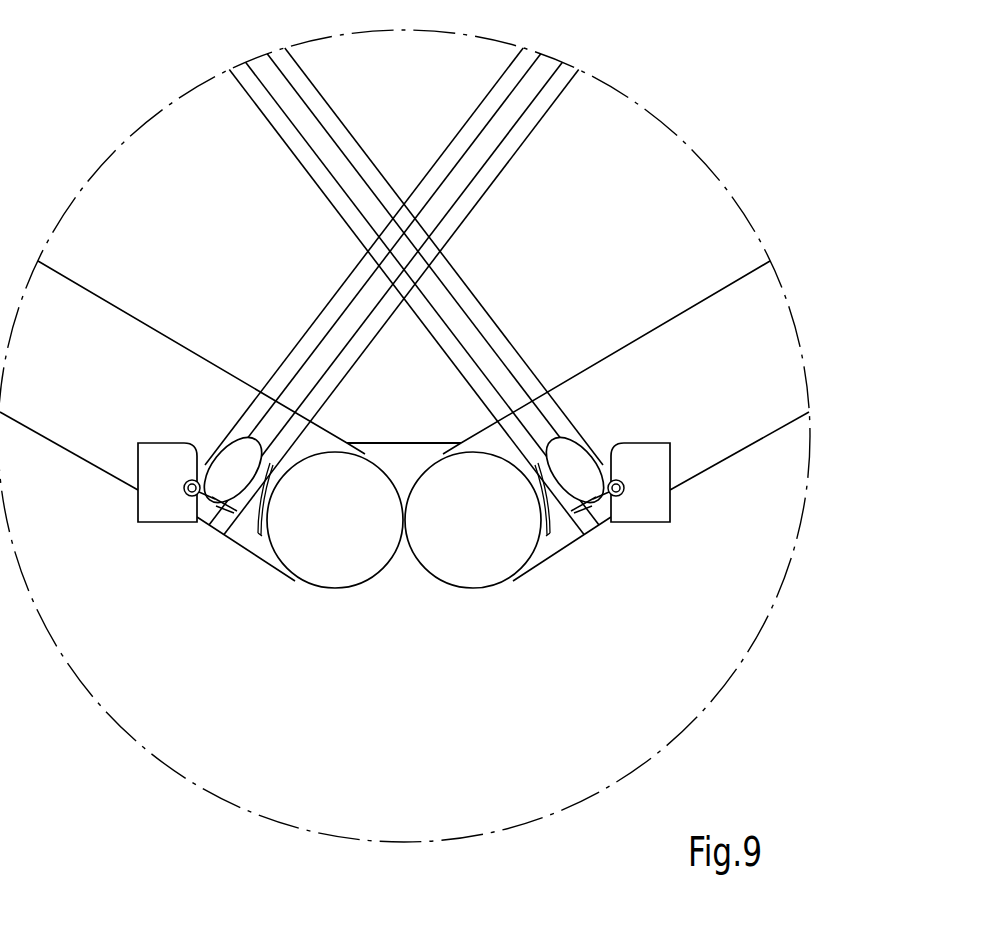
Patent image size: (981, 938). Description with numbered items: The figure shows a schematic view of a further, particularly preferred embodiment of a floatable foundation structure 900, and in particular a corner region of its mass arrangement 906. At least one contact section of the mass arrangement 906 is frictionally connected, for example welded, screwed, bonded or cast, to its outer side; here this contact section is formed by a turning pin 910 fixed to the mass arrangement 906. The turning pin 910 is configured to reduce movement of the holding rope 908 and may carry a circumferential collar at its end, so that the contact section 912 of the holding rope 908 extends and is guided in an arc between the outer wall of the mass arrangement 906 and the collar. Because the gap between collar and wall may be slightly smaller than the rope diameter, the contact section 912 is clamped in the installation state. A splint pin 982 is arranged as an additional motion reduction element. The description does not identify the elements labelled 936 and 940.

The floatable foundation structure 900 is at (745, 98).
The mass arrangement 906 is at (733, 562).
The holding rope 908 is at (312, 165).
The turning pin 910 is at (233, 455).
The contact section of the holding rope 912 is at (201, 428).
The rollers 936 is at (340, 568).
The carriage 940 is at (147, 503).
The splint pin 982 is at (198, 500).